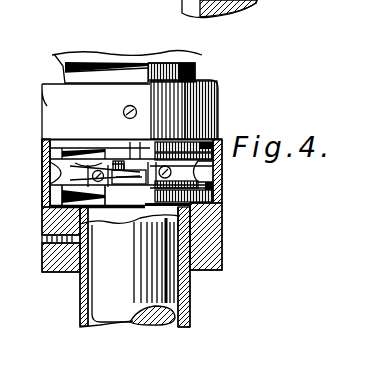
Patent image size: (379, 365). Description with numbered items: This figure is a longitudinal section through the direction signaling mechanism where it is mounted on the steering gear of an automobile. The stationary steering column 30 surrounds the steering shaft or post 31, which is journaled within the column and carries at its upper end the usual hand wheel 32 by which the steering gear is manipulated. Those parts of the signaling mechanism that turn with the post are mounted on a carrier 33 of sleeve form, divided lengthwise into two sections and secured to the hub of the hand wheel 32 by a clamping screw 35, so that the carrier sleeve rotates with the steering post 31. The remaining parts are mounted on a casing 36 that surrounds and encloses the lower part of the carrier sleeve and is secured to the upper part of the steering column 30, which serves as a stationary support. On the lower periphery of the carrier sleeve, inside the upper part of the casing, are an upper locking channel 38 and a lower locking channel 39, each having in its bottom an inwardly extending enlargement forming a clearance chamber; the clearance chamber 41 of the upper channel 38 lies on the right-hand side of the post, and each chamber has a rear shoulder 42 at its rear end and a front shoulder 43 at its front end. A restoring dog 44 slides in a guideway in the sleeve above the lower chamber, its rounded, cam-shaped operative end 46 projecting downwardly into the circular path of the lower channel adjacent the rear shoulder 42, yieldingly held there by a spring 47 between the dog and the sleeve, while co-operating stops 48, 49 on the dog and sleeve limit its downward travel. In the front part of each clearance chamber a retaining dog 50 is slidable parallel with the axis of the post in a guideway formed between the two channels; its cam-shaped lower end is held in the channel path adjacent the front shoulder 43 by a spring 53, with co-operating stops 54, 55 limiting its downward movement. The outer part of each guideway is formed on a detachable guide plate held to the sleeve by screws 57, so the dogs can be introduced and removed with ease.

The steering column 30 is at (190, 320).
The steering shaft or post 31 is at (106, 267).
The hand wheel 32 is at (195, 52).
The carrier 33 is at (41, 84).
The clamping screw 35 is at (130, 105).
The casing 36 is at (43, 236).
The upper locking channel 38 is at (222, 139).
The lower locking channel 39 is at (223, 201).
The clearance chamber 41 is at (138, 142).
The rear shoulder 42 is at (90, 139).
The front shoulder 43 is at (158, 138).
The restoring dog 44 is at (130, 231).
The operative end of restoring dog 46 is at (52, 160).
The spring 47 is at (154, 260).
The stop 48 is at (52, 192).
The stop 49 is at (52, 177).
The retaining dog 50 is at (185, 228).
The spring 53 is at (190, 242).
The stop 54 is at (223, 182).
The stop 55 is at (140, 174).
The screws 57 is at (205, 172).